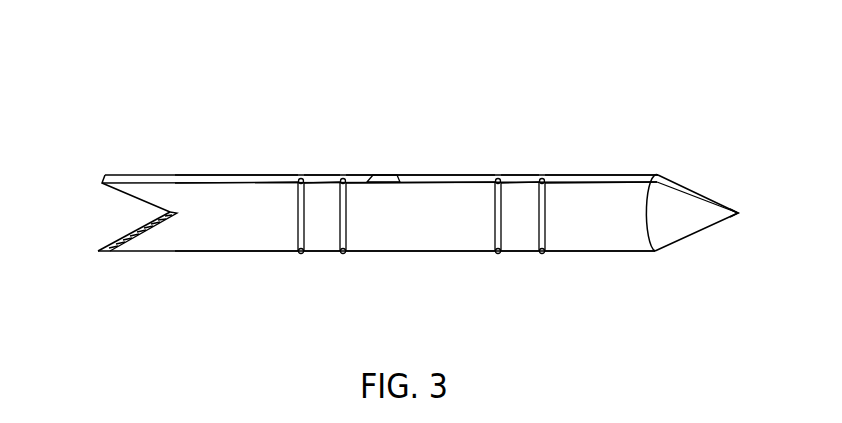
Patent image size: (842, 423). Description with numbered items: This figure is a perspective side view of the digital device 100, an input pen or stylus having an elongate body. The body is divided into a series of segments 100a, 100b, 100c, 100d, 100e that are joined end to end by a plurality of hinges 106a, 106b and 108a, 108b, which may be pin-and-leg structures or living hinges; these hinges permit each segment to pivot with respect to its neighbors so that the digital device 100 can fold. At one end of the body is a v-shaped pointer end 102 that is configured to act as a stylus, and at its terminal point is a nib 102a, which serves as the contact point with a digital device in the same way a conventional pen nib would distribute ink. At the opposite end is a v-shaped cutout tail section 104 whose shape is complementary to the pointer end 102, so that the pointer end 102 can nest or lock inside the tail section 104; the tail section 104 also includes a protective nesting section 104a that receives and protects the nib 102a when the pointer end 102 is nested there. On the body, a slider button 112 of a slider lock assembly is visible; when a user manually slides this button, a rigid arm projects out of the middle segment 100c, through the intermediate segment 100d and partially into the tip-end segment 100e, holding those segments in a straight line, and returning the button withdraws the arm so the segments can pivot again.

The digital device 100 is at (652, 77).
The segment 100a is at (228, 210).
The segment 100b is at (318, 198).
The middle segment 100c is at (433, 210).
The intermediate segment 100d is at (519, 199).
The tip-end segment 100e is at (588, 210).
The v-shaped pointer end 102 is at (683, 185).
The nib 102a is at (737, 215).
The v-shaped cutout tail section 104 is at (105, 206).
The nesting section 104a is at (169, 210).
The hinge 106a is at (301, 253).
The hinge 106b is at (343, 253).
The hinge 108a is at (498, 253).
The hinge 108b is at (542, 253).
The slider button 112 is at (397, 177).